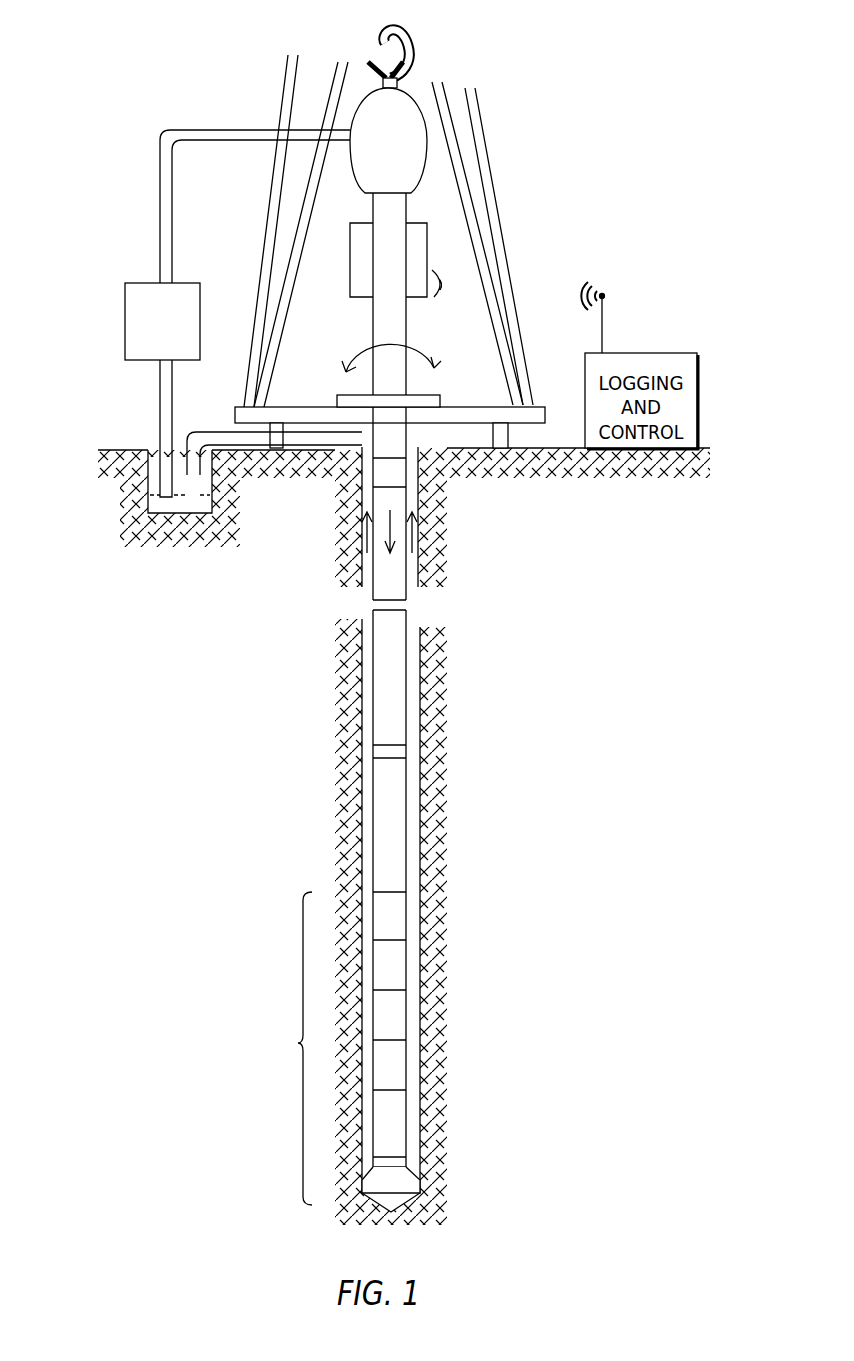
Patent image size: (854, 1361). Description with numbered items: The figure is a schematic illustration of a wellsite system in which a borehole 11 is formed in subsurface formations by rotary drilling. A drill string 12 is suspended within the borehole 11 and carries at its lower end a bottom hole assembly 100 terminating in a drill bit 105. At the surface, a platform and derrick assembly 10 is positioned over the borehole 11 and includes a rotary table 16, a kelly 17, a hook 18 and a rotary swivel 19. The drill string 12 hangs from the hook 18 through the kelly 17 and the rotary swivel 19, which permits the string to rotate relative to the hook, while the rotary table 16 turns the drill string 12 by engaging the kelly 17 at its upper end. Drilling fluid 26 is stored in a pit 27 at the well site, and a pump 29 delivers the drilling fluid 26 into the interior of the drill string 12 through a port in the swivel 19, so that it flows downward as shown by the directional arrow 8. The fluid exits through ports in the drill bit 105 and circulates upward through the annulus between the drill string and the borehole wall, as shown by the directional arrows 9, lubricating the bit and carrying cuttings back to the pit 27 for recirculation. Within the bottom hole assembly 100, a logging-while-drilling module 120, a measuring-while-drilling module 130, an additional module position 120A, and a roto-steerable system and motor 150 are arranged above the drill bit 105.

The platform and derrick assembly 10 is at (510, 127).
The hook 18 is at (378, 43).
The rotary swivel 19 is at (357, 170).
The kelly 17 is at (385, 308).
The rotary table 16 is at (443, 396).
The drill string 12 is at (373, 432).
The borehole 11 is at (445, 407).
The pump 29 is at (202, 330).
The pit 27 is at (152, 448).
The drilling fluid 26 is at (181, 510).
The directional arrows 9 is at (350, 519).
The directional arrow 8 is at (388, 535).
The bottom hole assembly 100 is at (281, 1048).
The logging-while-drilling module 120 is at (393, 963).
The measuring-while-drilling module 130 is at (393, 1020).
The additional LWD/MWD module 120A is at (397, 1063).
The roto-steerable system and motor 150 is at (392, 1123).
The drill bit 105 is at (397, 1185).